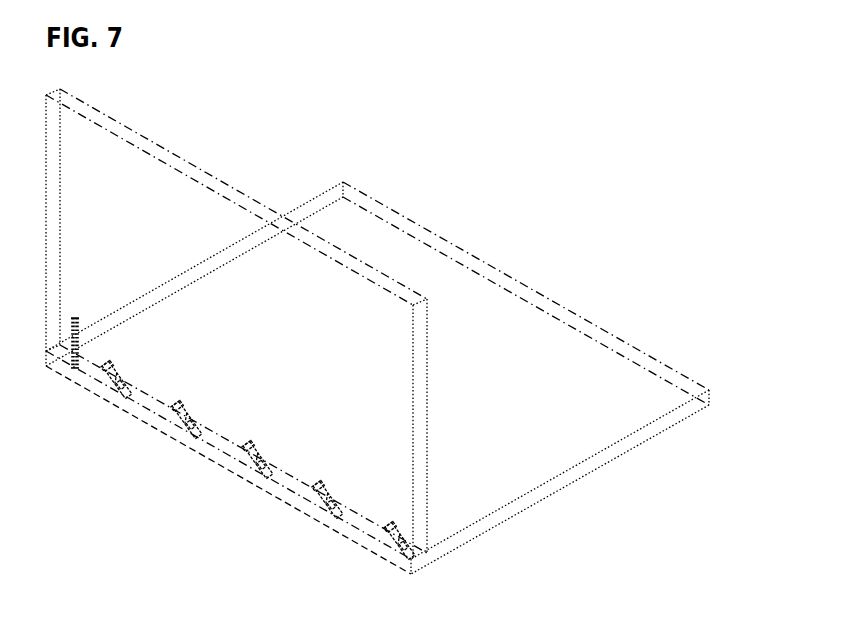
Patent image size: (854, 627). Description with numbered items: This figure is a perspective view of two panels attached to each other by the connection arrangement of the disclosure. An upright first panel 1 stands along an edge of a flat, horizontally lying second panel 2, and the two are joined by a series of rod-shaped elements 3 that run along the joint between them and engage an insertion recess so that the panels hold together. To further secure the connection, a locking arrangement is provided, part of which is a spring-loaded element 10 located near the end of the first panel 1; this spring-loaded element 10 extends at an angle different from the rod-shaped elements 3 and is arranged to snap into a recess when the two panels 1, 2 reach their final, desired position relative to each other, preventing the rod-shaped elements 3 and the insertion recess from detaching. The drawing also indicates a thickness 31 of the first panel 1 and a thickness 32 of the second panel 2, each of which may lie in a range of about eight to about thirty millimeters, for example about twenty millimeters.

The first panel 1 is at (136, 237).
The second panel 2 is at (526, 458).
The rod-shaped element 3 is at (392, 523).
The spring-loaded element 10 is at (80, 349).
The thickness of the first panel 31 is at (380, 425).
The thickness of the second panel 32 is at (692, 372).